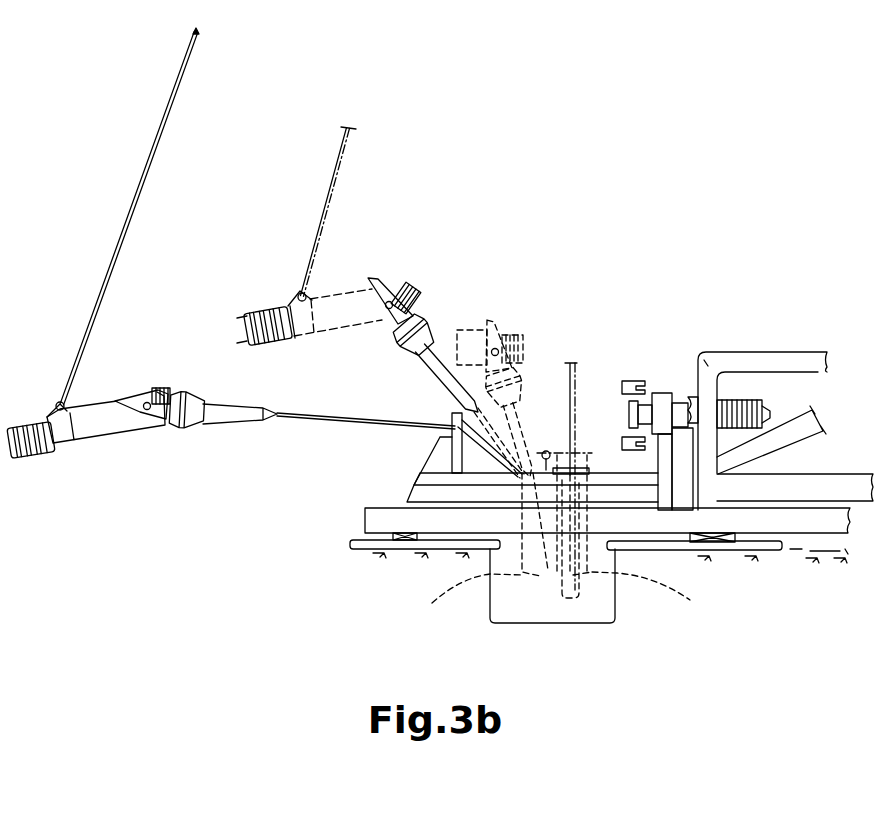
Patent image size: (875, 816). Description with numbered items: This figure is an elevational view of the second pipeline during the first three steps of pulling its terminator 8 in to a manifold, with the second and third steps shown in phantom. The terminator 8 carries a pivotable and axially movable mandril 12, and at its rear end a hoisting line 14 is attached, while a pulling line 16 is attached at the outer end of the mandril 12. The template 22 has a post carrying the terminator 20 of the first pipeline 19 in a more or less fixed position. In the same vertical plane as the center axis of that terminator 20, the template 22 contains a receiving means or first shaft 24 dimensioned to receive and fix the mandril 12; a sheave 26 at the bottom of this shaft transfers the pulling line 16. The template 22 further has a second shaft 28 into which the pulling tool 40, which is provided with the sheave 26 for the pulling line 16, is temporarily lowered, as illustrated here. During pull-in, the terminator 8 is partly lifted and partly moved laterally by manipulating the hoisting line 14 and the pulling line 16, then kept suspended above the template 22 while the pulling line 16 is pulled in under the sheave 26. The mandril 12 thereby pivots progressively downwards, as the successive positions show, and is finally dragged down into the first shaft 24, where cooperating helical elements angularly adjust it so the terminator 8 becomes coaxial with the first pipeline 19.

The terminator 8 is at (108, 427).
The mandril 12 is at (228, 418).
The hoisting line 14 is at (163, 121).
The pulling line 16 is at (328, 426).
The first pipeline 19 is at (745, 405).
The terminator 20 is at (650, 373).
The template 22 is at (408, 487).
The receiving means or first shaft 24 is at (458, 596).
The sheave 26 is at (545, 574).
The second receiving means or second shaft 28 is at (658, 595).
The pulling tool 40 is at (588, 442).